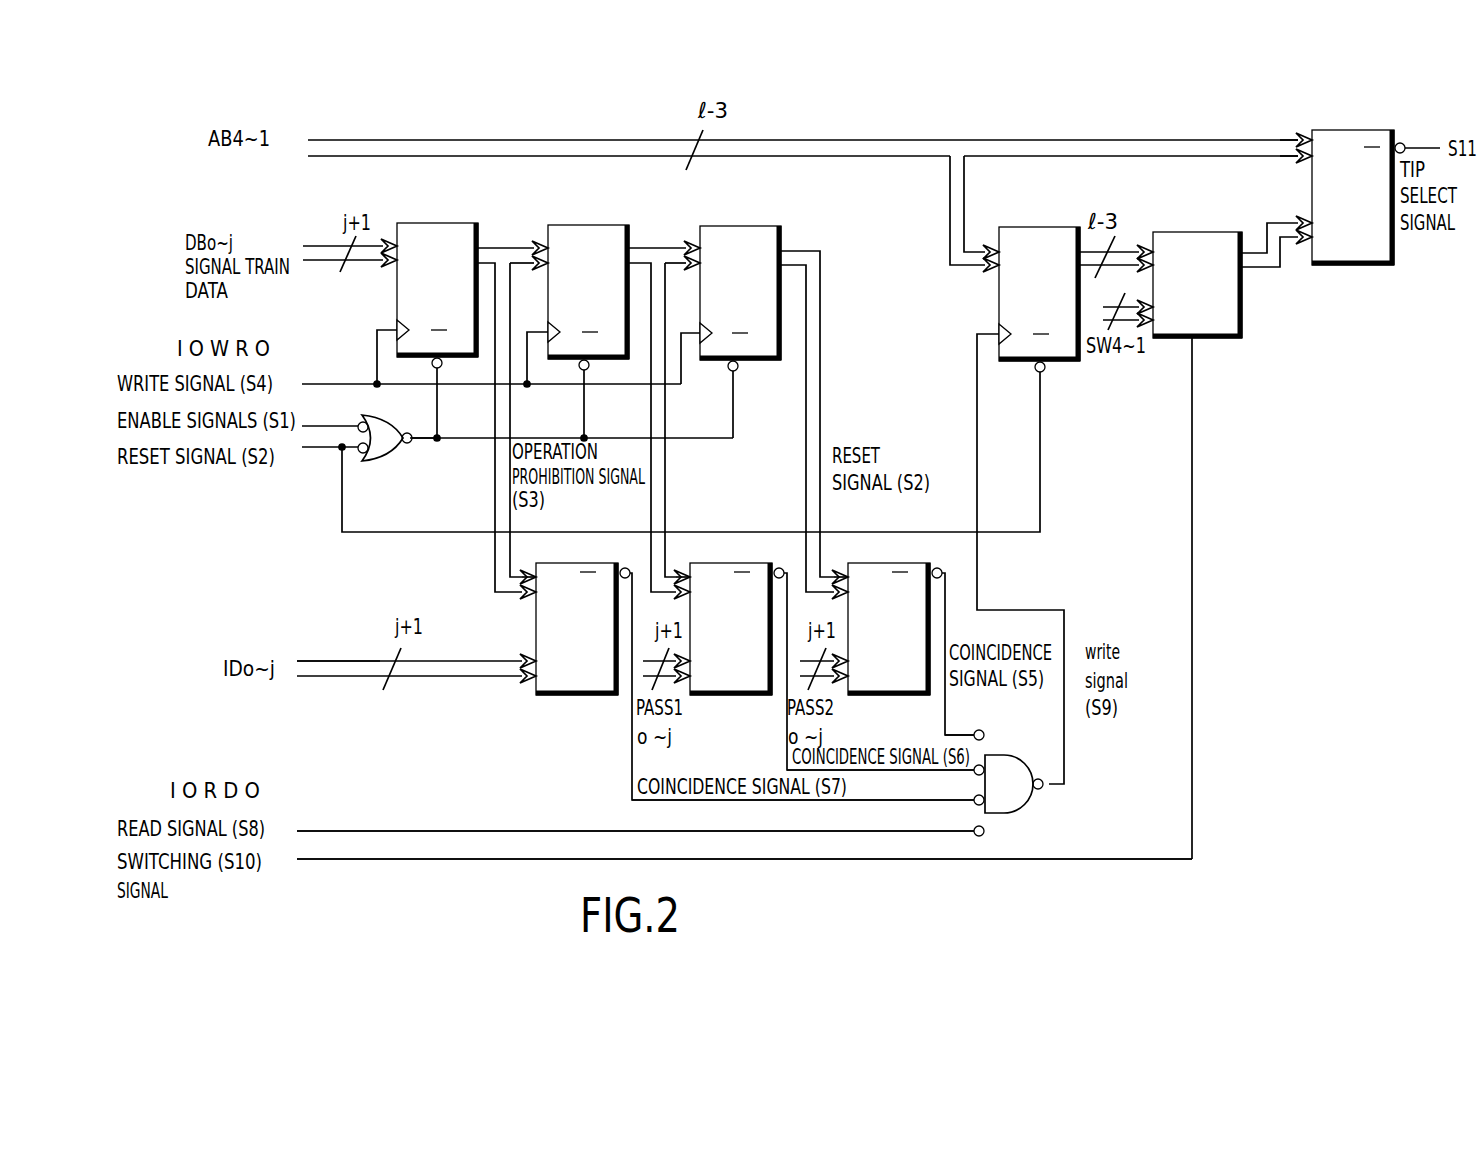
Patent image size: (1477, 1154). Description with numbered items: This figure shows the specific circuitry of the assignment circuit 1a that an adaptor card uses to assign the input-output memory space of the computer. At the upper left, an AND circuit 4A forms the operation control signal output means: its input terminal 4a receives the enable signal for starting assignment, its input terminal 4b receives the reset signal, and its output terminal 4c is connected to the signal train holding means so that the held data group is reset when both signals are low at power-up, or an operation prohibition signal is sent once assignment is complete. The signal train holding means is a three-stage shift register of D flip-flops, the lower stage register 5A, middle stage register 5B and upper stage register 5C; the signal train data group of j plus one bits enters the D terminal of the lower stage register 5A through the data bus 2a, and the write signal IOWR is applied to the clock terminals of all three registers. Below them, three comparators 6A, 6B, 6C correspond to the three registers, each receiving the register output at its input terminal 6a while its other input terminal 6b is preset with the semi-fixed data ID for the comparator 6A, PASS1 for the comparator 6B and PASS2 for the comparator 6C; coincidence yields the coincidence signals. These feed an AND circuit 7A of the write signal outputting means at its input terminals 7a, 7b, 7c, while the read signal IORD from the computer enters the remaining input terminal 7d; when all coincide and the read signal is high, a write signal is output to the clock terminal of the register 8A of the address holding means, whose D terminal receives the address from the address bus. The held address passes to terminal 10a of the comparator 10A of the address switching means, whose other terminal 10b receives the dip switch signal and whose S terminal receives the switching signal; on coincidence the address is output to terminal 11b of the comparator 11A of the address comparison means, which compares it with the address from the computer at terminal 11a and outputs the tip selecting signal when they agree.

The assignment circuit 1a is at (1068, 868).
The data bus 2a is at (347, 678).
The AND circuit 4A is at (384, 452).
The input terminal 4a is at (345, 426).
The input terminal 4b is at (335, 448).
The output terminal 4c is at (418, 443).
The lower stage register 5A is at (430, 223).
The middle stage register 5B is at (588, 225).
The upper stage register 5C is at (740, 226).
The comparator 6A is at (572, 695).
The comparator 6B is at (737, 697).
The comparator 6C is at (915, 563).
The input terminal 6a is at (533, 583).
The input terminal 6b is at (533, 684).
The AND circuit 7A is at (1022, 810).
The input terminal 7a is at (957, 733).
The input terminal 7b is at (957, 773).
The input terminal 7c is at (877, 802).
The input terminal 7d is at (812, 833).
The register 8A is at (1032, 227).
The comparator 10A is at (1205, 232).
The terminal 10a is at (1153, 243).
The terminal 10b is at (1152, 340).
The comparator 11A is at (1338, 130).
The terminal 11a is at (1310, 142).
The terminal 11b is at (1310, 240).